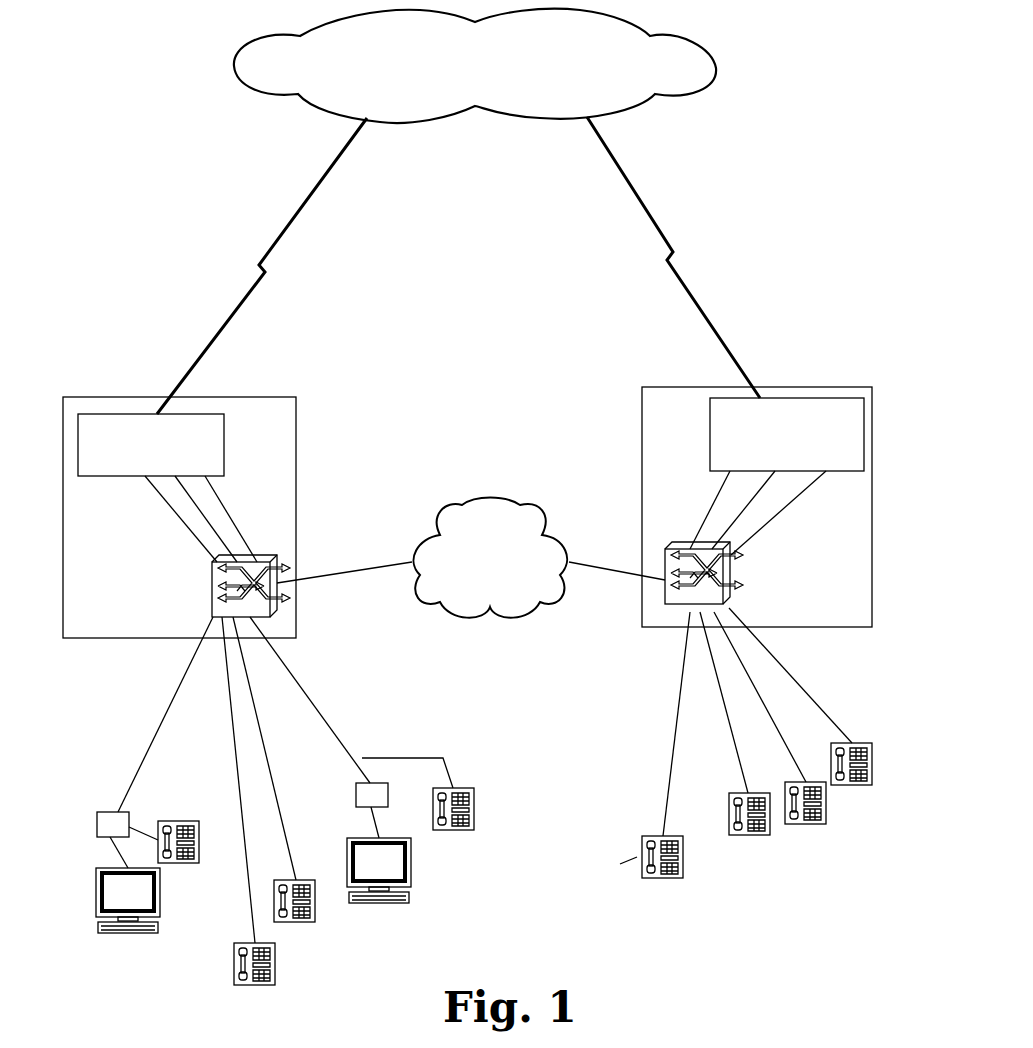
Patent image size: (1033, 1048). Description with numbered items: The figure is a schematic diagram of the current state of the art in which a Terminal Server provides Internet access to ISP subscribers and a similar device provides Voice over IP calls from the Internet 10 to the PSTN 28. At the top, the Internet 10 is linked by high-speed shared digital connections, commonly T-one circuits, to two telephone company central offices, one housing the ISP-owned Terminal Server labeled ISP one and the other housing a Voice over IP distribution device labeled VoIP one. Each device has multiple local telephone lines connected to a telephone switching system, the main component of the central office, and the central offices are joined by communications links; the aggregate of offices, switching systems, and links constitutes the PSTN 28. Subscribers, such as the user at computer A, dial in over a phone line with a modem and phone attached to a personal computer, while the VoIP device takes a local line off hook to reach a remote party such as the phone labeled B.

The Internet 10 is at (652, 25).
The PSTN 28 is at (498, 624).